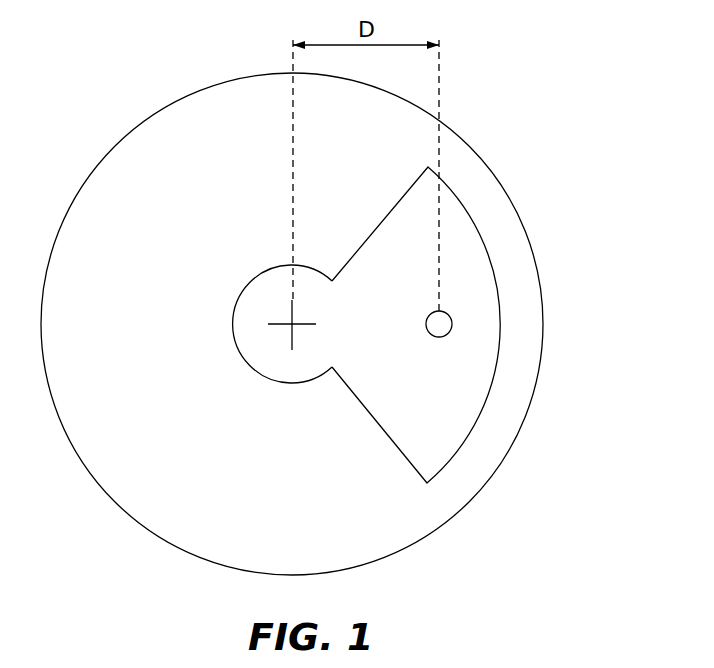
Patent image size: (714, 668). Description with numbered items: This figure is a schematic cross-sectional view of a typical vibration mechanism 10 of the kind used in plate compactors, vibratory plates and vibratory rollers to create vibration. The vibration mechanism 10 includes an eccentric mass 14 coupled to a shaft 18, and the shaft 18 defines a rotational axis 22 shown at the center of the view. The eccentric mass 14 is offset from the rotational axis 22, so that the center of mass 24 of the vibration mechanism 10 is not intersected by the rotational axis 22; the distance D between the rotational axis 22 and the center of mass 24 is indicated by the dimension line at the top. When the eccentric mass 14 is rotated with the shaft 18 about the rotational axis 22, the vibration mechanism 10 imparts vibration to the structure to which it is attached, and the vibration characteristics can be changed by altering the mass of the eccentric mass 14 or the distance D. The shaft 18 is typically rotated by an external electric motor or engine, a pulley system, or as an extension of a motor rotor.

The vibration mechanism 10 is at (514, 80).
The eccentric mass 14 is at (440, 395).
The shaft 18 is at (265, 378).
The rotational axis 22 is at (292, 324).
The center of mass 24 is at (447, 315).